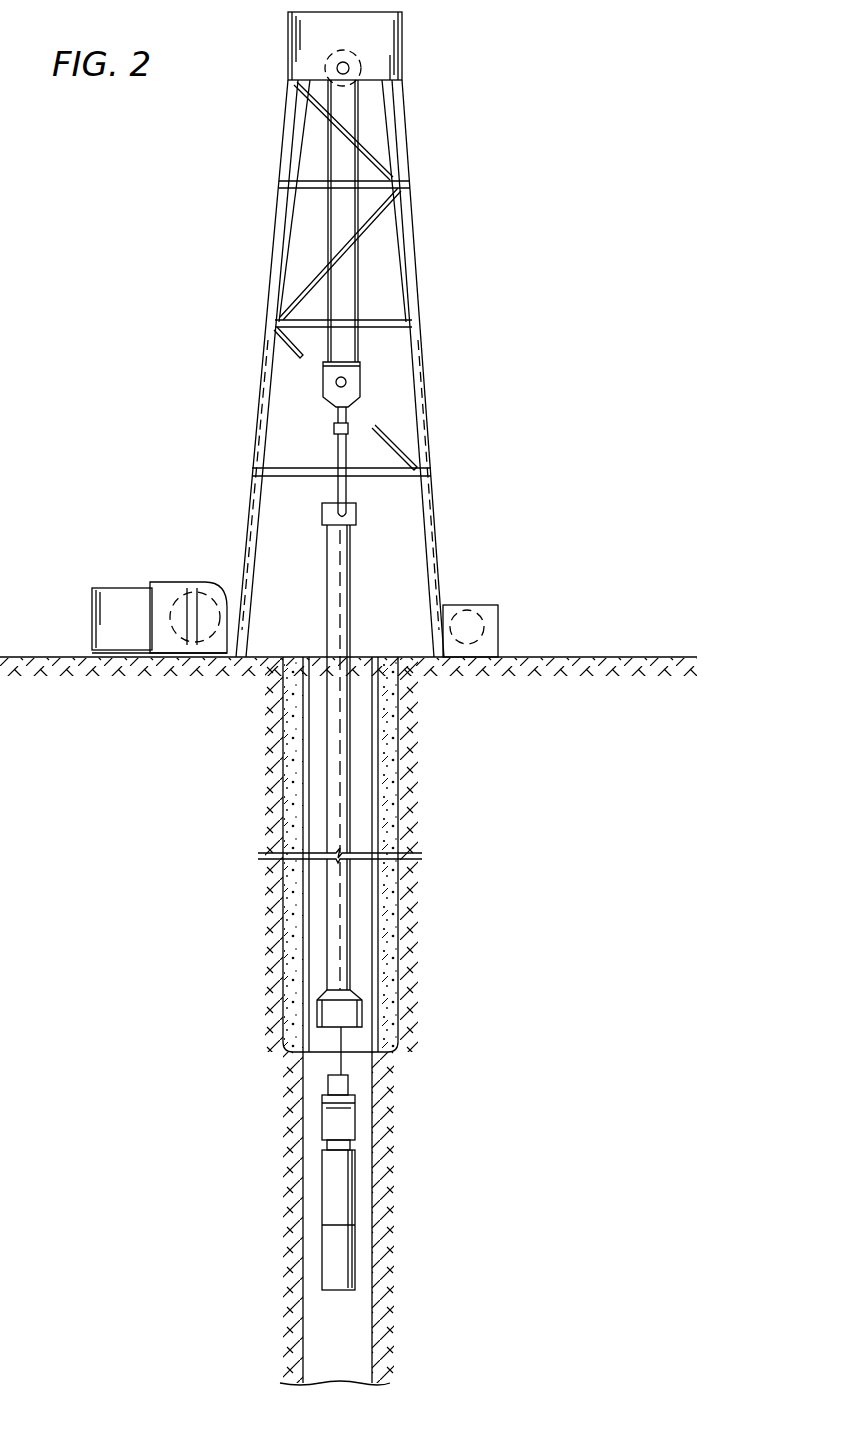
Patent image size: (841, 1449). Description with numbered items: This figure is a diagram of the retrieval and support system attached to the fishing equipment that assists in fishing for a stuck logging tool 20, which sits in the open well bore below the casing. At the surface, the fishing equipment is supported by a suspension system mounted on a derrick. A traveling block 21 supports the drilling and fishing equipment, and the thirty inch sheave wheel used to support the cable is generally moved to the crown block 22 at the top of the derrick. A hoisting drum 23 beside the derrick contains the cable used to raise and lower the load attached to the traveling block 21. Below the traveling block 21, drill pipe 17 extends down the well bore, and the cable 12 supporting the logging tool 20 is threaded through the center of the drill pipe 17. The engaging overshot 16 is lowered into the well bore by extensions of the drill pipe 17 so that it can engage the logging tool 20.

The cable 12 is at (340, 757).
The engaging overshot 16 is at (362, 1013).
The drill pipe 17 is at (352, 920).
The logging tool 20 is at (355, 1188).
The traveling block 21 is at (363, 372).
The crown block 22 is at (365, 55).
The hoisting drum 23 is at (207, 583).